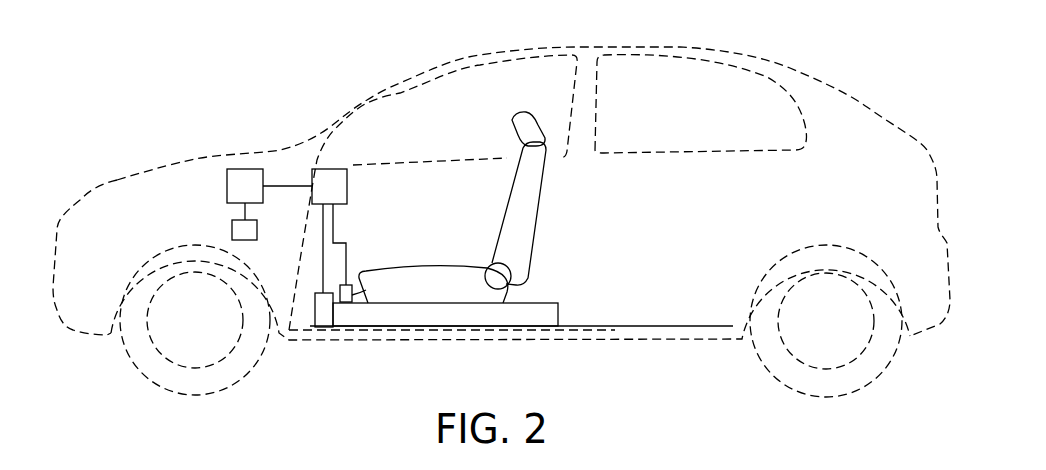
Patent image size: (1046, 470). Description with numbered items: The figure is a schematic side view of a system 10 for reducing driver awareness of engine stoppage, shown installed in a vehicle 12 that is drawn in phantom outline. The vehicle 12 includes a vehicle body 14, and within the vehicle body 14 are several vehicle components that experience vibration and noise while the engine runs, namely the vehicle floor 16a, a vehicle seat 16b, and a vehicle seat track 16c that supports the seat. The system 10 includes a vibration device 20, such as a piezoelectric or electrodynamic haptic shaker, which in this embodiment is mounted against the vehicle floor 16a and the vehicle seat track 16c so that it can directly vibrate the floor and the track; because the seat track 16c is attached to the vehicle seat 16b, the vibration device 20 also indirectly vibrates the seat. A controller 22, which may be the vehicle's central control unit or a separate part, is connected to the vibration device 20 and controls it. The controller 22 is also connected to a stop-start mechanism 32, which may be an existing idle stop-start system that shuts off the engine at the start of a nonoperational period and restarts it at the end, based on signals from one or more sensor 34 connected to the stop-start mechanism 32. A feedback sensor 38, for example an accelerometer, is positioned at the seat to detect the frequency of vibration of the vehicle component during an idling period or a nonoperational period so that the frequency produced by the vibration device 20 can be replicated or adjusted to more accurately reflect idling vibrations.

The system 10 is at (210, 50).
The vehicle 12 is at (203, 143).
The vehicle body 14 is at (373, 97).
The vehicle floor 16a is at (670, 325).
The vehicle seat 16b is at (518, 205).
The vehicle seat track 16c is at (557, 320).
The vibration device 20 is at (315, 310).
The controller 22 is at (347, 185).
The stop-start mechanism 32 is at (227, 187).
The sensor 34 is at (232, 228).
The feedback sensor 38 is at (364, 300).